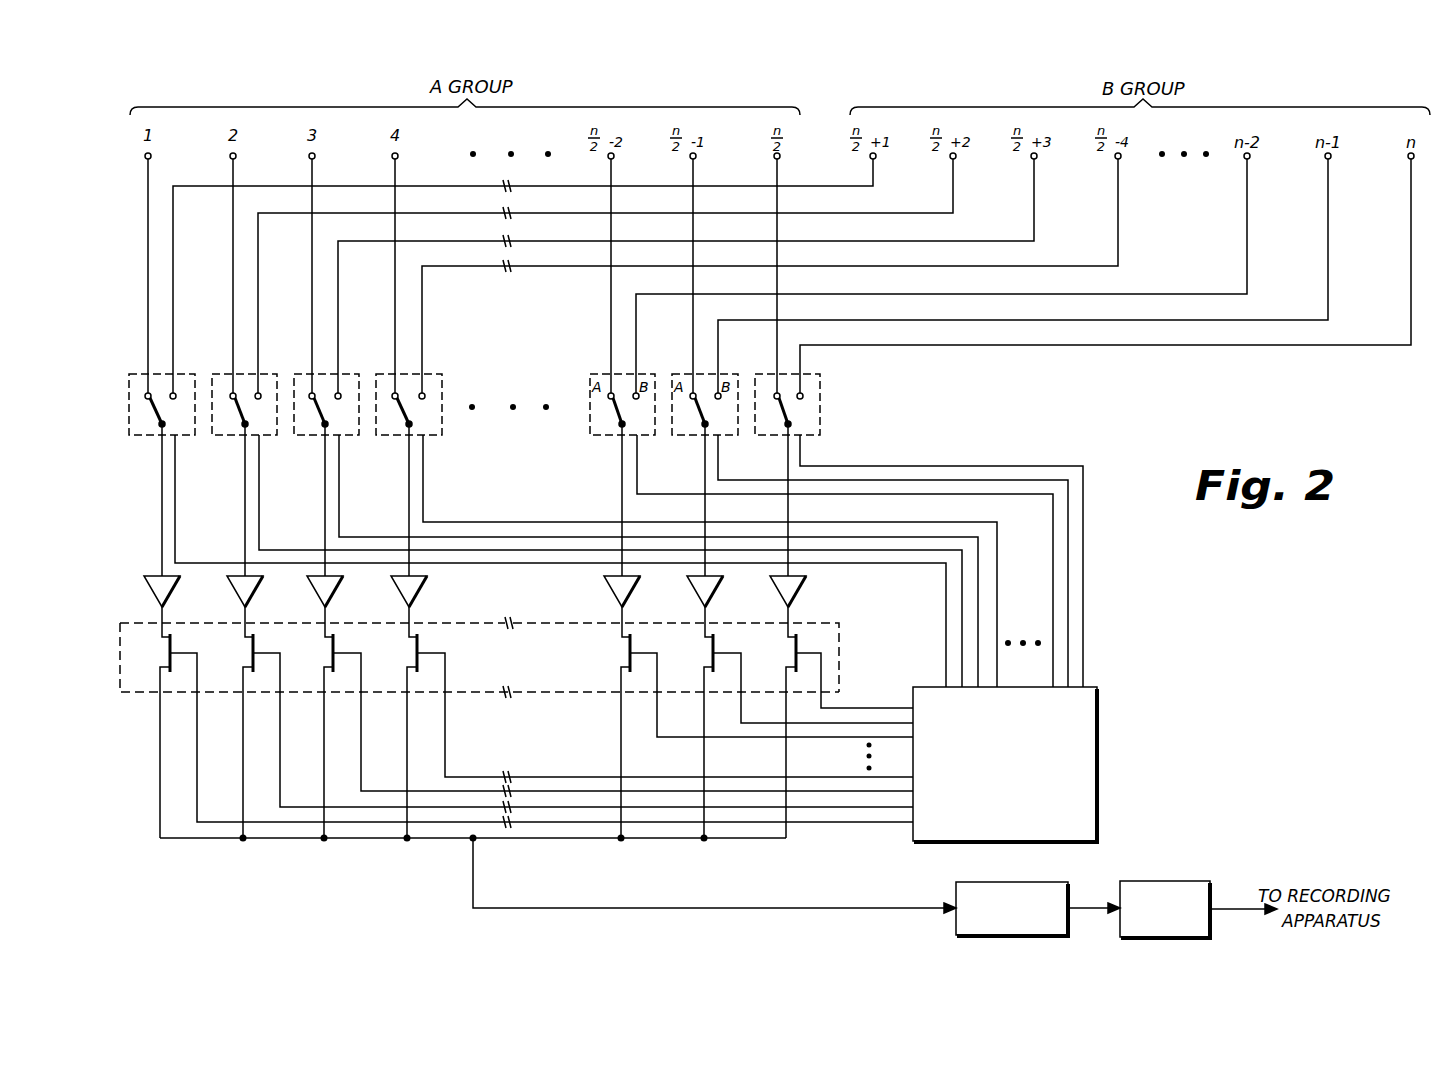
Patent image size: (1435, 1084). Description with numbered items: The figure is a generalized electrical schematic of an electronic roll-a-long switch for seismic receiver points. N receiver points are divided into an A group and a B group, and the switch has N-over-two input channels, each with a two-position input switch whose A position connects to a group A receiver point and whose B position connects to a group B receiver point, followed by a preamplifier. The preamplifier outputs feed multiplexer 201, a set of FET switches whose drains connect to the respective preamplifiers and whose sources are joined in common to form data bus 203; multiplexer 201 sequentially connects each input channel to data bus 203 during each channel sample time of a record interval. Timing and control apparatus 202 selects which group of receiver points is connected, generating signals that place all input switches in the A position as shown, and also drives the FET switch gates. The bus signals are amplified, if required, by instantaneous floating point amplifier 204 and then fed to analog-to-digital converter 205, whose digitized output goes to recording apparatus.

The multiplexer 201 is at (138, 693).
The timing and control apparatus 202 is at (1100, 708).
The data bus 203 is at (667, 839).
The instantaneous floating point amplifier 204 is at (1000, 937).
The analog-to-digital converter 205 is at (1167, 880).